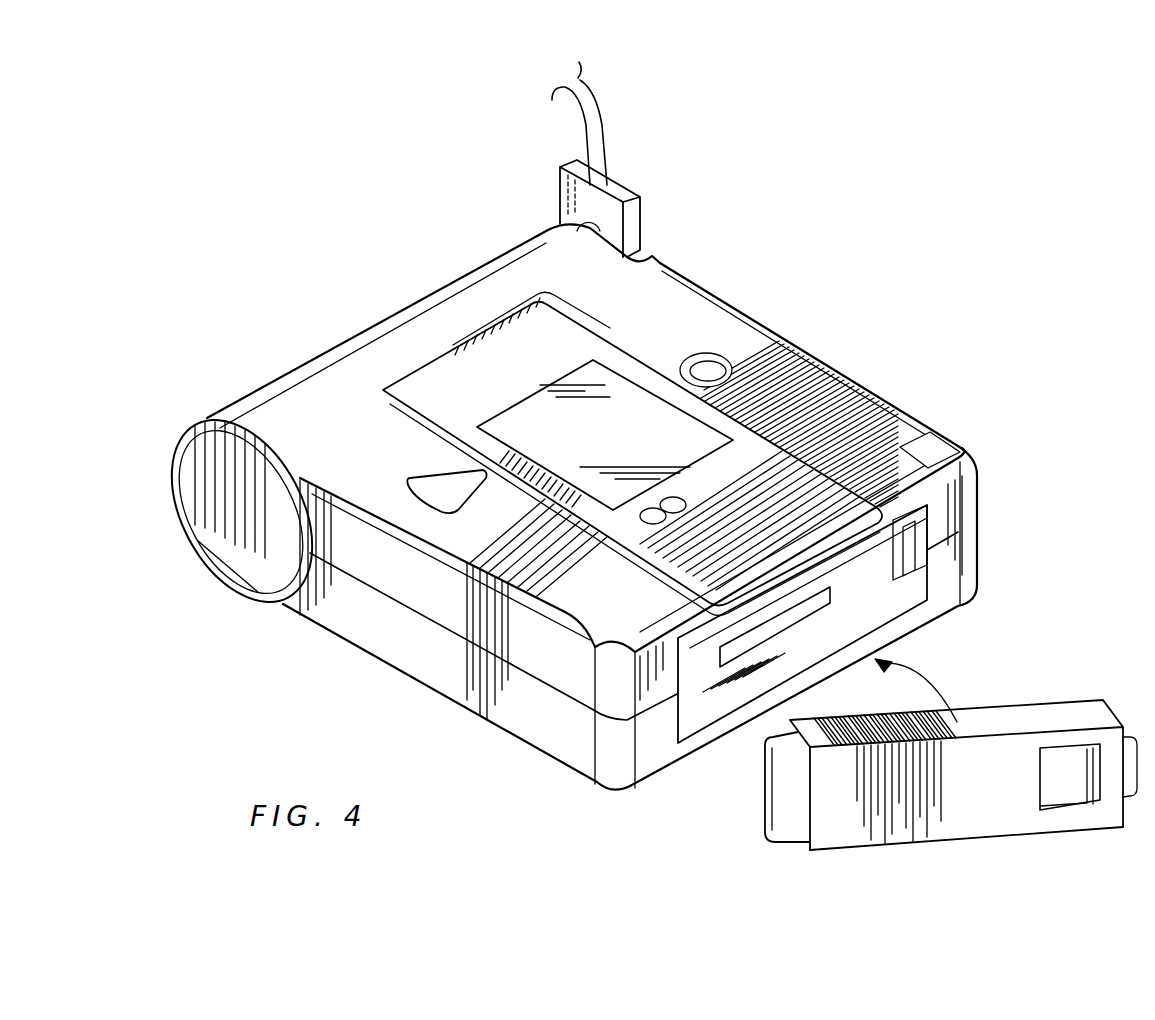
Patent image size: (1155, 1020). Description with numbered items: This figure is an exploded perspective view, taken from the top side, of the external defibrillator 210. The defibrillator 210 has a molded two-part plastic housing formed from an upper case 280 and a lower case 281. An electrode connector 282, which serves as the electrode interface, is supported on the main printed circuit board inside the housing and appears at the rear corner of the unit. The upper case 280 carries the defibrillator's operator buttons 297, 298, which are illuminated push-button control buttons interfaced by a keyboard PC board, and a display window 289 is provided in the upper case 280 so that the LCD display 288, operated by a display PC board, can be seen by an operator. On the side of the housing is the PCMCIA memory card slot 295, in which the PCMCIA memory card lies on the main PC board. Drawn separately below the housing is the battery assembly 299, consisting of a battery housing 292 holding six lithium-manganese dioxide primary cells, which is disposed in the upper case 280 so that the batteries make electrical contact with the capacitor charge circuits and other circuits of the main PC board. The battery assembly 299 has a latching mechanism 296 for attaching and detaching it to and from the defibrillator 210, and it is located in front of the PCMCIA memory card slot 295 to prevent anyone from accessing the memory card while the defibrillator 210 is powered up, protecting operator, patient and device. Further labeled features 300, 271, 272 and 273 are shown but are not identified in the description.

The defibrillator 210 is at (1032, 235).
The upper case 280 is at (827, 397).
The lower case 281 is at (412, 647).
The electrode connector 282 is at (633, 223).
The cable opening 300 is at (573, 220).
The display window 289 is at (618, 423).
The LCD display 288 is at (558, 425).
The operator button 298 is at (712, 370).
The button 271 is at (672, 500).
The button 272 is at (652, 520).
The operator button 297 is at (450, 500).
The indicator 273 is at (935, 448).
The PCMCIA memory card slot 295 is at (748, 642).
The battery housing 292 is at (1038, 720).
The battery assembly 299 is at (868, 848).
The latching mechanism 296 is at (1065, 782).